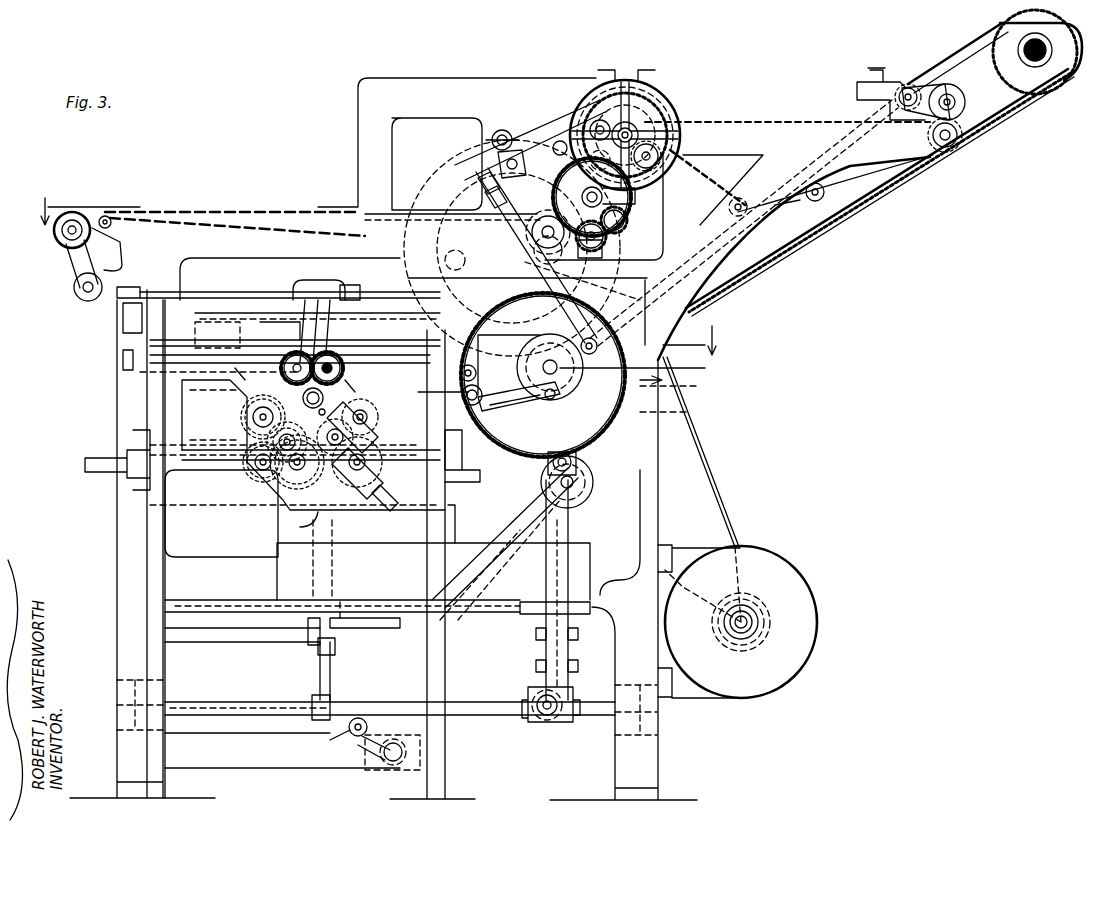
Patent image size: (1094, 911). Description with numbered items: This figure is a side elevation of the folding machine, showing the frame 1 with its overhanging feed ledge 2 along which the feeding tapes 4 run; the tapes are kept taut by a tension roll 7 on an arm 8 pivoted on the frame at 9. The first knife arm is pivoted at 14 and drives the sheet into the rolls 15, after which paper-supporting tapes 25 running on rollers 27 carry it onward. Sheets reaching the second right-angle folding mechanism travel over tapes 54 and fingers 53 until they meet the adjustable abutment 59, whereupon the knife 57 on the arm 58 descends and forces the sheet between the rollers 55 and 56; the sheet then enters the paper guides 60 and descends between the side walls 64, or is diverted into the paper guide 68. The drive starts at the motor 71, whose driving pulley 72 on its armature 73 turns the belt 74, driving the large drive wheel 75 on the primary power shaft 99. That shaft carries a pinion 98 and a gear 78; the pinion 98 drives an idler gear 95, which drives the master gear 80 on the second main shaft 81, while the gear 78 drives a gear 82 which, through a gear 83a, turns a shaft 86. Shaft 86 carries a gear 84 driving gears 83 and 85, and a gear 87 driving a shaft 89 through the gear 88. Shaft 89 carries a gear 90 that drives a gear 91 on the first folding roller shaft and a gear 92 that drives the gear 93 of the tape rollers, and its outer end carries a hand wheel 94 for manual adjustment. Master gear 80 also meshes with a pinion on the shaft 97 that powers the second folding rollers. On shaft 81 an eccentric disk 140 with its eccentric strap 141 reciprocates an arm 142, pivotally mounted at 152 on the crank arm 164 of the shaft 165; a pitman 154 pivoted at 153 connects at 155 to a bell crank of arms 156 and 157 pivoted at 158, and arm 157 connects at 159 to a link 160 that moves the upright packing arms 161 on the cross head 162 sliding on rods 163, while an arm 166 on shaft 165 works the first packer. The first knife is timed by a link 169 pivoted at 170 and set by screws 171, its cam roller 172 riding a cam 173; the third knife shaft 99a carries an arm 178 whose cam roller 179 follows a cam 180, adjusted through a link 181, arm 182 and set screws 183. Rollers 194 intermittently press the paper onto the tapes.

The frame 1 is at (650, 760).
The overhanging feed ledge 2 is at (853, 162).
The feeding tapes 4 is at (870, 222).
The tension roll 7 is at (815, 202).
The arm 8 is at (800, 205).
The pivot 9 is at (742, 218).
The pivot shaft 14 is at (503, 130).
The roll 15 is at (545, 118).
The paper-supporting tapes 25 is at (80, 266).
The roller 27 is at (62, 244).
The fingers 53 is at (222, 330).
The tapes 54 is at (290, 360).
The roller 55 is at (343, 368).
The roller 56 is at (240, 380).
The knife 57 is at (322, 300).
The arm 58 is at (345, 300).
The adjustable abutment 59 is at (258, 300).
The paper guides 60 is at (212, 450).
The side walls 64 is at (278, 544).
The paper guide 68 is at (400, 450).
The motor 71 is at (815, 633).
The driving pulley 72 is at (768, 612).
The armature 73 is at (745, 620).
The belt 74 is at (722, 520).
The large drive wheel 75 is at (438, 160).
The gear 78 is at (470, 232).
The master gear 80 is at (608, 428).
The second main shaft 81 is at (635, 372).
The gear 82 is at (582, 256).
The gear 83 is at (604, 256).
The gear 83a is at (608, 242).
The gear 84 is at (560, 147).
The gear 85 is at (628, 222).
The shaft 86 is at (632, 214).
The gear 87 is at (636, 200).
The gear 88 is at (676, 108).
The shaft 89 is at (704, 120).
The gear 90 is at (660, 90).
The gear 91 is at (580, 114).
The gear 92 is at (665, 180).
The gear 93 is at (668, 160).
The hand wheel 94 is at (625, 82).
The idler gear 95 is at (470, 282).
The shaft 97 is at (460, 372).
The pinion 98 is at (470, 213).
The primary power shaft 99 is at (447, 260).
The shaft 99a is at (430, 392).
The eccentrically-positioned disk member 140 is at (679, 393).
The eccentric strap 141 is at (680, 415).
The arm 142 is at (557, 527).
The pivotal mounting 152 is at (547, 724).
The pivot 153 is at (576, 465).
The pitman 154 is at (512, 518).
The pivot 155 is at (348, 732).
The bell crank arm 156 is at (362, 745).
The bell crank arm 157 is at (332, 662).
The pivot 158 is at (388, 762).
The connection 159 is at (392, 618).
The link 160 is at (345, 618).
The upright arms 161 is at (300, 527).
The cross head 162 is at (308, 632).
The supporting rods 163 is at (242, 632).
The crank arm 164 is at (558, 724).
The shaft 165 is at (495, 716).
The arm 166 is at (318, 672).
The link 169 is at (486, 202).
The pivot 170 is at (480, 190).
The set screws 171 is at (524, 174).
The cam roller 172 is at (610, 337).
The cam 173 is at (664, 362).
The arm 178 is at (472, 456).
The cam roller 179 is at (572, 523).
The cam 180 is at (528, 356).
The link 181 is at (519, 414).
The arm 182 is at (505, 368).
The set screws 183 is at (522, 420).
The rollers 194 is at (950, 95).